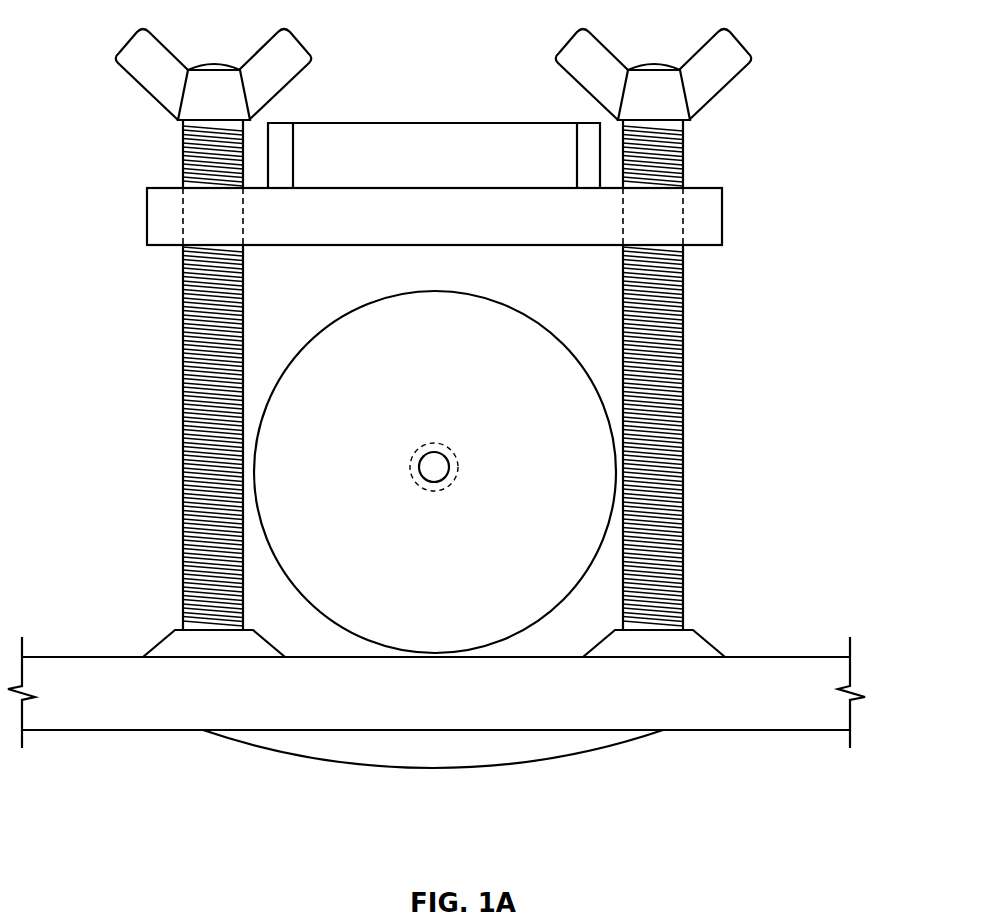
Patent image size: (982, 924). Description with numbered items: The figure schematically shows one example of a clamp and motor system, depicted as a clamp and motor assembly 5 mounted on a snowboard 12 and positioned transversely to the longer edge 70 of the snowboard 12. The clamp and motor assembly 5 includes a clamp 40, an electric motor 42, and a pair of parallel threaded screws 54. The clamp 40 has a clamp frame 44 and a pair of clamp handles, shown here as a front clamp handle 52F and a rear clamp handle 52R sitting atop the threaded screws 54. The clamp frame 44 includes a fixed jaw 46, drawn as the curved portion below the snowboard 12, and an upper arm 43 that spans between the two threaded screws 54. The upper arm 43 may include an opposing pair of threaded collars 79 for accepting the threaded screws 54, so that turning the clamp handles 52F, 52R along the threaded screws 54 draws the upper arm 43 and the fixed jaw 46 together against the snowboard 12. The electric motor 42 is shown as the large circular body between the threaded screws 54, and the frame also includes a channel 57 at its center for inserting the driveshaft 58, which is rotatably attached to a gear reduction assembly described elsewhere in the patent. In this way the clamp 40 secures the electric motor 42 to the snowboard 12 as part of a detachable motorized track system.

The clamp and motor assembly 5 is at (767, 383).
The snowboard 12 is at (795, 730).
The clamp 40 is at (438, 182).
The electric motor 42 is at (448, 561).
The upper arm 43 is at (573, 230).
The clamp frame 44 is at (722, 216).
The fixed jaw 46 is at (470, 768).
The front clamp handle 52F is at (315, 63).
The rear clamp handle 52R is at (755, 63).
The threaded screw 54 is at (685, 370).
The channel 57 is at (410, 468).
The driveshaft 58 is at (448, 463).
The longer edge 70 is at (719, 713).
The threaded collar 79 is at (183, 220).